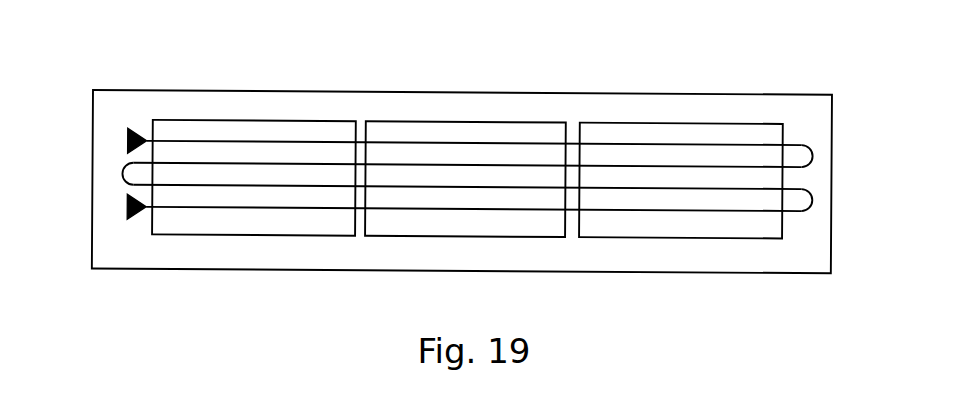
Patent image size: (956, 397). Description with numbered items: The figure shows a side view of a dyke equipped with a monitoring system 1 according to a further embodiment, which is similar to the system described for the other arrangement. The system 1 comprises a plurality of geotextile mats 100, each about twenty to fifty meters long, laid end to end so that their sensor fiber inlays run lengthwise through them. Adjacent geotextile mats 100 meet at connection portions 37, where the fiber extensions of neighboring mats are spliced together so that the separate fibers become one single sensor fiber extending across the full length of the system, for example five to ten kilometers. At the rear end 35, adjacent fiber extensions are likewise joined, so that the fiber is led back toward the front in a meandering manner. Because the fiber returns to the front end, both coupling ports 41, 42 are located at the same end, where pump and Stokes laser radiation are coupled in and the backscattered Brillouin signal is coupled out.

The sensor device 1 is at (665, 92).
The geotextile mat 100 is at (248, 118).
The rear end 35 is at (837, 178).
The coupling port 41 is at (128, 137).
The coupling port 42 is at (130, 212).
The connection portion 37 is at (359, 248).